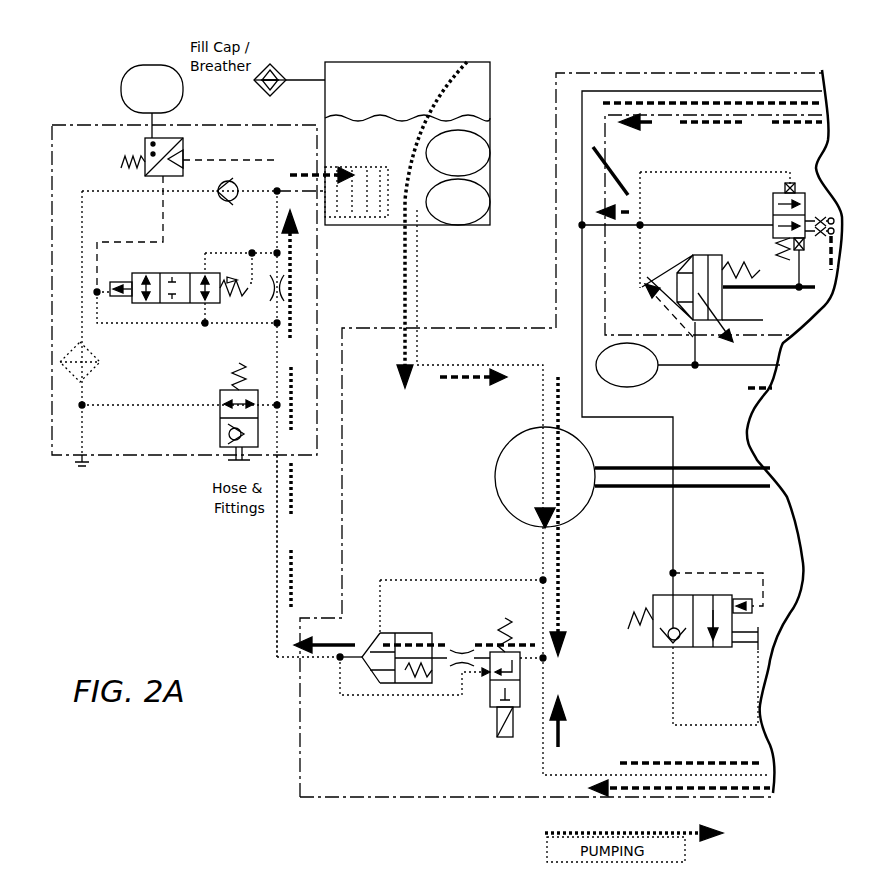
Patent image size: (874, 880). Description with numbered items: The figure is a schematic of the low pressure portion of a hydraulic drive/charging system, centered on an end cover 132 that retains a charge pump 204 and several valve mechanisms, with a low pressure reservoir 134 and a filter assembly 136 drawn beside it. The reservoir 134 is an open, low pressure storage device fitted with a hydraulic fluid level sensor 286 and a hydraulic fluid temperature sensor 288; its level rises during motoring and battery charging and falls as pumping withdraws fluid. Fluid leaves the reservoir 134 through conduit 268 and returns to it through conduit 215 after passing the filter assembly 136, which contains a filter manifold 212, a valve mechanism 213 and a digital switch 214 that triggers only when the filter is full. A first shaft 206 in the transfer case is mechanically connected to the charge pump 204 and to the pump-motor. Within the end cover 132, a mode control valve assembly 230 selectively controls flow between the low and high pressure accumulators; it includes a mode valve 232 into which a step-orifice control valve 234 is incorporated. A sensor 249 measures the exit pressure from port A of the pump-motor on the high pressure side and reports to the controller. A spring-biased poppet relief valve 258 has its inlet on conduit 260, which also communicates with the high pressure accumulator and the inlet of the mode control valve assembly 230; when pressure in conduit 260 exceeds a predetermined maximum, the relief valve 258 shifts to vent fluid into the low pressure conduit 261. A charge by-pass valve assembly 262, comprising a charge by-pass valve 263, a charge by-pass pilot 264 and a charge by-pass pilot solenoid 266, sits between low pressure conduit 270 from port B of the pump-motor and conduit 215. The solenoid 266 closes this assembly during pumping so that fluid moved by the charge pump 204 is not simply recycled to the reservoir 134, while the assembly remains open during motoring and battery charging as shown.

The end cover 132 is at (323, 800).
The low pressure reservoir 134 is at (489, 70).
The filter assembly 136 is at (82, 124).
The charge pump 204 is at (495, 473).
The first shaft 206 is at (713, 472).
The filter manifold 212 is at (171, 460).
The valve mechanism 213 is at (187, 272).
The digital switch 214 is at (140, 63).
The conduit 215 is at (277, 578).
The mode control valve assembly 230 is at (677, 113).
The mode valve 232 is at (703, 254).
The step-orifice control valve 234 is at (762, 158).
The sensor 249 is at (660, 375).
The relief valve 258 is at (660, 595).
The conduit 260 is at (583, 396).
The conduit 261 is at (673, 690).
The charge by-pass valve assembly 262 is at (395, 565).
The charge by-pass valve 263 is at (390, 684).
The charge by-pass pilot 264 is at (489, 684).
The charge by-pass pilot solenoid 266 is at (505, 738).
The conduit 268 is at (461, 364).
The conduit 270 is at (548, 768).
The hydraulic fluid level sensor 286 is at (483, 135).
The hydraulic fluid temperature sensor 288 is at (486, 184).